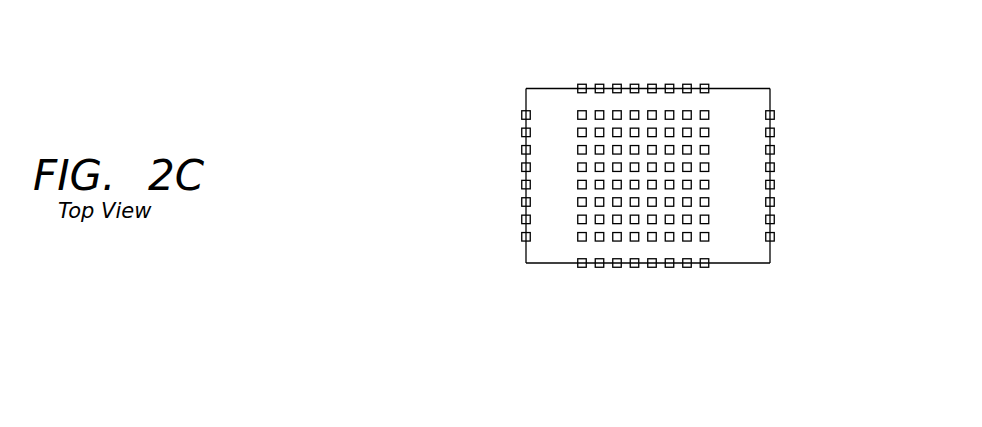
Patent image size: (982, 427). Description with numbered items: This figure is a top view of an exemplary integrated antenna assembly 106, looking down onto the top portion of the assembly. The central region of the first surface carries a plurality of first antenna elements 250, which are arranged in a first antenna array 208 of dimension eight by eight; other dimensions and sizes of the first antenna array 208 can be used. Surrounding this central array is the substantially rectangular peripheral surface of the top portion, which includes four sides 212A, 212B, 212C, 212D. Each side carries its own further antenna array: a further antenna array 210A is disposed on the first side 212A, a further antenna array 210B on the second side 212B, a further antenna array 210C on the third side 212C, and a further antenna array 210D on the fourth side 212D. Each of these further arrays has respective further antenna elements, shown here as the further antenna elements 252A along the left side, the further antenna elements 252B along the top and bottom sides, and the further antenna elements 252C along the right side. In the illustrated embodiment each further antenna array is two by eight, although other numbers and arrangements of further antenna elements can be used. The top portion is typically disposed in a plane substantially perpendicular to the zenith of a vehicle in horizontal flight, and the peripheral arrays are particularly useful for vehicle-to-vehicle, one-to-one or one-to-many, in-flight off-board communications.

The semiconductor package 106 is at (776, 49).
The first antenna array 208 is at (559, 247).
The further antenna array 210A is at (494, 130).
The further antenna array 210B is at (659, 293).
The further antenna array 210C is at (801, 173).
The further antenna array 210D is at (618, 61).
The side 212A is at (527, 97).
The side 212B is at (733, 264).
The side 212C is at (770, 95).
The side 212D is at (548, 88).
The first antenna elements 250 is at (577, 184).
The further antenna elements 252A is at (522, 237).
The further antenna elements 252B is at (580, 88).
The further antenna elements 252C is at (778, 218).